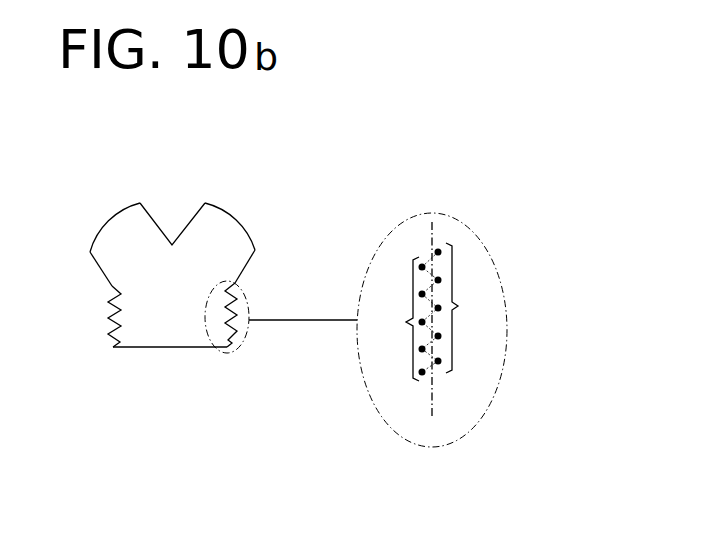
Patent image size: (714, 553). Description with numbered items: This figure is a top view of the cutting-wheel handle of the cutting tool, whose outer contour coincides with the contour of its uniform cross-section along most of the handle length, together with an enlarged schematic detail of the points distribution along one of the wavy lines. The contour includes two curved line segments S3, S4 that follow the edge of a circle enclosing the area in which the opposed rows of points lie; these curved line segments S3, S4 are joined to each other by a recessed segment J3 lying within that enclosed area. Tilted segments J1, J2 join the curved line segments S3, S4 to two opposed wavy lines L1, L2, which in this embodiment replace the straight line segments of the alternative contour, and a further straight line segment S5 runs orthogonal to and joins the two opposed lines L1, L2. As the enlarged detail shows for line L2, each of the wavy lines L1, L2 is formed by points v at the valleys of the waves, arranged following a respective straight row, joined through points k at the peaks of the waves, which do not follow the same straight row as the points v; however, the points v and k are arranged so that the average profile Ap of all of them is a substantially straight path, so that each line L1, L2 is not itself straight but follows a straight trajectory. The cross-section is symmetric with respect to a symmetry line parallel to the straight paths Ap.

The curved line segment S3 is at (112, 220).
The recessed segment J3 is at (172, 245).
The curved line segment S4 is at (232, 219).
The tilted segment J1 is at (98, 265).
The tilted segment J2 is at (245, 265).
The wavy line L1 is at (112, 323).
The wavy line L2 is at (235, 317).
The straight line segment S5 is at (165, 348).
The points at the valleys of the waves v is at (404, 319).
The points at the peaks of the waves k is at (460, 308).
The average profile Ap is at (433, 333).